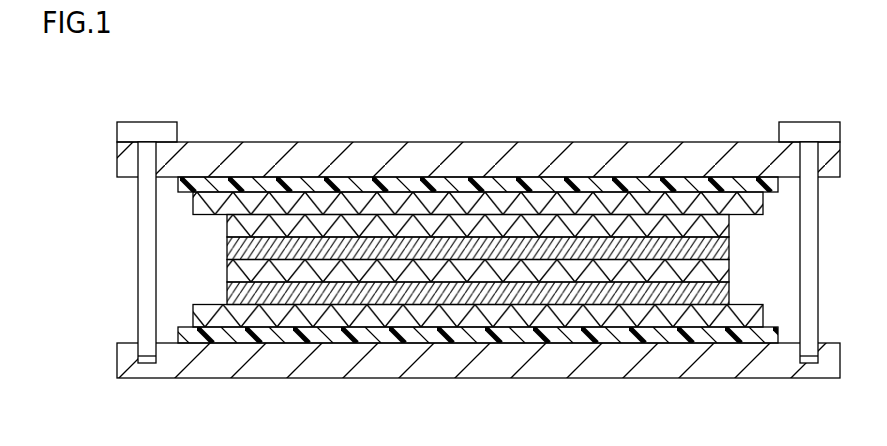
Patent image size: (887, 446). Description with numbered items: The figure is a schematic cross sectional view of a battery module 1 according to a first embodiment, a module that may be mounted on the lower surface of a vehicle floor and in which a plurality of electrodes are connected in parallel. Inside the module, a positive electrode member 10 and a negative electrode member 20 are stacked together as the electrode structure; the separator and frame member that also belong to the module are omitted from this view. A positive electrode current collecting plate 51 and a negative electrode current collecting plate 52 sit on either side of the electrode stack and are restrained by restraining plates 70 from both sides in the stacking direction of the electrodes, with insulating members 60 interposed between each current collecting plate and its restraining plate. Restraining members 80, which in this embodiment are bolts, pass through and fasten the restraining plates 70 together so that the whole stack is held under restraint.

The battery module 1 is at (479, 116).
The positive electrode member 10 is at (227, 252).
The negative electrode member 20 is at (227, 228).
The positive electrode current collecting plate 51 is at (207, 315).
The negative electrode current collecting plate 52 is at (207, 205).
The insulating member 60 is at (263, 183).
The restraining plate 70 is at (202, 150).
The restraining member 80 is at (145, 130).